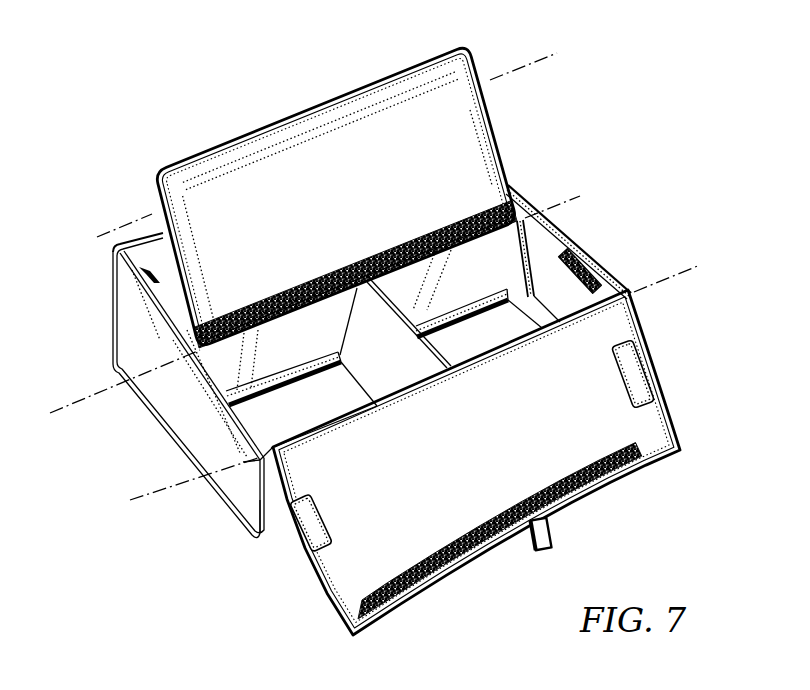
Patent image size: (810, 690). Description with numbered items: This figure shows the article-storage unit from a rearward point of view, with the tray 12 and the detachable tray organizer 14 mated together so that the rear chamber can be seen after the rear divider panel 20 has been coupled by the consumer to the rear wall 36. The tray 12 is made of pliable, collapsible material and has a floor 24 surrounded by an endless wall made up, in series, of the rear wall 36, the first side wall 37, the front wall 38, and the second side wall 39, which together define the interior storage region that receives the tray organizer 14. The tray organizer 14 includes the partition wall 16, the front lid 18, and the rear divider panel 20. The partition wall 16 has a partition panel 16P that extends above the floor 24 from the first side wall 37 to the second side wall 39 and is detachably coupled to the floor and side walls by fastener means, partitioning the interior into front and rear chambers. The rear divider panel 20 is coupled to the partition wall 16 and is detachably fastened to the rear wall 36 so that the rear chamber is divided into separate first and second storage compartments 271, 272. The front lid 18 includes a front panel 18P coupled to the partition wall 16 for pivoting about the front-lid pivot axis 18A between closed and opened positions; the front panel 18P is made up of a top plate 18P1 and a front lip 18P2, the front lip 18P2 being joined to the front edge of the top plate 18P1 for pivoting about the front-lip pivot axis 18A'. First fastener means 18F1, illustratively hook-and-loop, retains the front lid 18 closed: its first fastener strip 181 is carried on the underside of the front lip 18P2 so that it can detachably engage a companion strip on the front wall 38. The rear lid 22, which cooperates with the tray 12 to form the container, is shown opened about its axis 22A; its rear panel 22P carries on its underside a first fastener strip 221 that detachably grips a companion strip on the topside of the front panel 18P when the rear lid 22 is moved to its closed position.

The tray 12 is at (143, 355).
The detachable tray organizer 14 is at (637, 154).
The partition wall 16 is at (525, 222).
The partition panel 16P is at (333, 305).
The front lid 18 is at (519, 140).
The front panel 18P is at (293, 180).
The top plate 18P1 is at (200, 278).
The front lip 18P2 is at (210, 173).
The first fastener strip 181 is at (377, 120).
The front-lid pivot axis 18A is at (315, 331).
The front-lip pivot axis 18A' is at (327, 124).
The first fastener means 18F1 is at (42, 12).
The rear divider panel 20 is at (632, 288).
The rear lid 22 is at (685, 409).
The rear panel 22P is at (453, 497).
The first fastener strip 221 is at (634, 462).
The pivot axis of front flap 22A is at (140, 503).
The floor 24 is at (320, 421).
The rear wall 36 is at (270, 517).
The first side wall 37 is at (231, 474).
The front wall 38 is at (158, 237).
The second side wall 39 is at (582, 288).
The first storage compartment 271 is at (294, 330).
The second storage compartment 272 is at (460, 268).